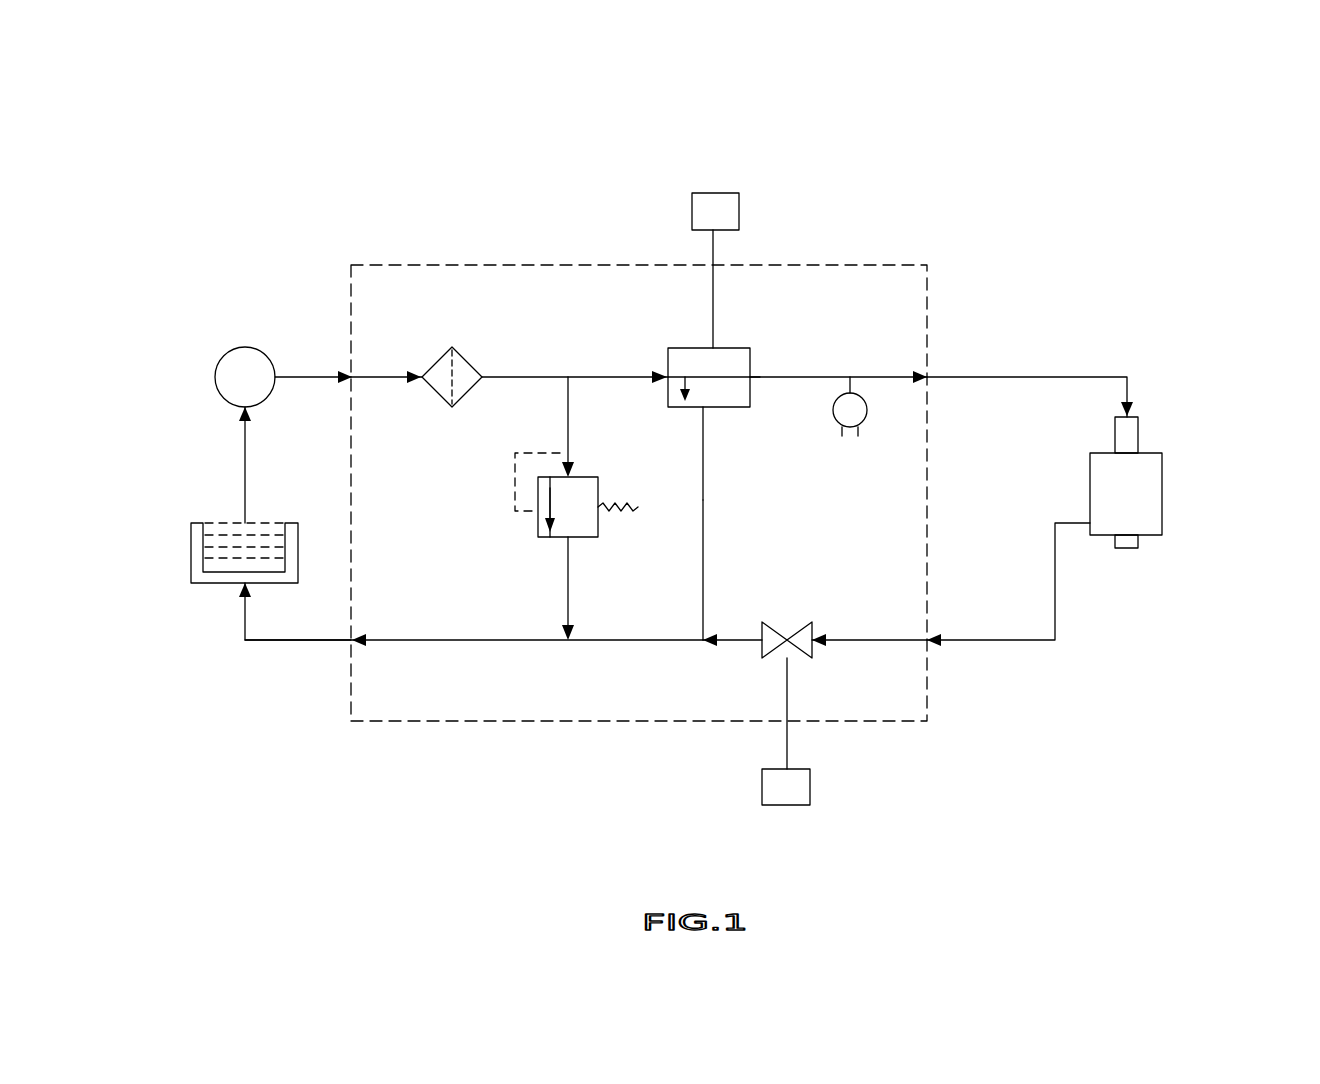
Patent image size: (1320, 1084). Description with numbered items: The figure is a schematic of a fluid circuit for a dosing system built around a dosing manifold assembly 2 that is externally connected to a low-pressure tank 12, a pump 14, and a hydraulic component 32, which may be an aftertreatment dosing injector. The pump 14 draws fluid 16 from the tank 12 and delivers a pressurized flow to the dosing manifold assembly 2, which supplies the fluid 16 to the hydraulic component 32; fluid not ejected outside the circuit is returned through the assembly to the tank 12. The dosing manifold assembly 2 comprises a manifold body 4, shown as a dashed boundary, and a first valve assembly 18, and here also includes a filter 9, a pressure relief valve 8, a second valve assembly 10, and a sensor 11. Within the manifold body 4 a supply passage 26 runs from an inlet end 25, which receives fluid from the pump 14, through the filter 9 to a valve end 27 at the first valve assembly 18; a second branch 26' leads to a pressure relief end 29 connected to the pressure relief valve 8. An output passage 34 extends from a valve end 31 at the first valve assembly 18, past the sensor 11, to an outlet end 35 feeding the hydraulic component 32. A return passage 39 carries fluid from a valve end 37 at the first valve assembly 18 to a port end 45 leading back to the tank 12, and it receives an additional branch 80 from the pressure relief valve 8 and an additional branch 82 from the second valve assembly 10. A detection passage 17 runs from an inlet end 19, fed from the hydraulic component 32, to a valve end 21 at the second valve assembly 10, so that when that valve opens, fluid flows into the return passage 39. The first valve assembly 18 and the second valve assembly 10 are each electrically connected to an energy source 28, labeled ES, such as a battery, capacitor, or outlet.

The dosing manifold assembly 2 is at (408, 124).
The manifold body 4 is at (483, 265).
The pressure relief valve 8 is at (598, 538).
The filter 9 is at (465, 362).
The second valve assembly 10 is at (770, 624).
The sensor 11 is at (866, 424).
The tank 12 is at (207, 586).
The pump 14 is at (251, 347).
The fluid 16 is at (216, 522).
The detection passage 17 is at (876, 642).
The first valve assembly 18 is at (748, 348).
The inlet end 19 is at (929, 644).
The valve end 21 is at (810, 626).
The inlet end 25 is at (348, 379).
The supply passage 26 is at (509, 356).
The second branch 26' is at (597, 427).
The valve end 27 is at (668, 372).
The energy source 28 is at (740, 199).
The pressure relief end 29 is at (572, 476).
The valve end 31 is at (752, 382).
The hydraulic component 32 is at (1162, 469).
The output passage 34 is at (808, 375).
The outlet end 35 is at (930, 376).
The valve end 37 is at (705, 418).
The return passage 39 is at (704, 500).
The port end 45 is at (346, 642).
The additional branch 80 is at (568, 576).
The additional branch 82 is at (742, 642).